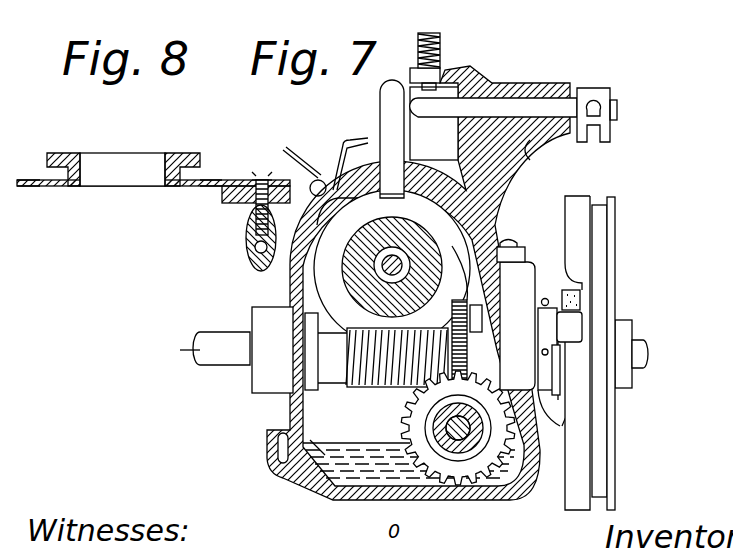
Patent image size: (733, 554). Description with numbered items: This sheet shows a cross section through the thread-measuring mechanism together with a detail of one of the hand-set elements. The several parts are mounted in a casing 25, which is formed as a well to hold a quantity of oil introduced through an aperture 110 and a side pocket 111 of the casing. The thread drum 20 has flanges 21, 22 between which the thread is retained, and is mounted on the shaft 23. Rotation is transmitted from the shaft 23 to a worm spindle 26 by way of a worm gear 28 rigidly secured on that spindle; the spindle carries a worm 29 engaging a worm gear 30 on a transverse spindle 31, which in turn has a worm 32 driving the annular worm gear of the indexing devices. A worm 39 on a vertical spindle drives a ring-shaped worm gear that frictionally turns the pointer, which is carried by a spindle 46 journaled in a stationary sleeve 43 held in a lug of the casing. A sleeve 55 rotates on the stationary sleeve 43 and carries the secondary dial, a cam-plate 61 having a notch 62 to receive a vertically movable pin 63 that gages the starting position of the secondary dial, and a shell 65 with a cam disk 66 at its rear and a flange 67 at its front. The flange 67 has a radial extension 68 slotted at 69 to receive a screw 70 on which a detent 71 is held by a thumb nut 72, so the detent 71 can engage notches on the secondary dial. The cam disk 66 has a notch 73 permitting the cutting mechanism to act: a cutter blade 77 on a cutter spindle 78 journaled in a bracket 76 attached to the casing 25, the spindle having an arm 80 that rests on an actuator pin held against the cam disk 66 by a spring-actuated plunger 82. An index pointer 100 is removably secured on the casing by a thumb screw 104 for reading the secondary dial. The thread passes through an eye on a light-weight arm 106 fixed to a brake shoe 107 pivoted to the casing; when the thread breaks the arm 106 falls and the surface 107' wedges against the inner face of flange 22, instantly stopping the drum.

In FIG. 7, the drum 20 is at (600, 473).
In FIG. 7, the flange 21 is at (616, 215).
In FIG. 7, the flange 22 is at (582, 196).
In FIG. 7, the shaft 23 is at (190, 350).
In FIG. 7, the casing 25 is at (340, 501).
In FIG. 7, the worm spindle 26 is at (456, 445).
In FIG. 7, the worm gear 28 is at (435, 475).
In FIG. 7, the worm 29 is at (536, 432).
In FIG. 7, the worm gear 30 is at (477, 370).
In FIG. 7, the transverse spindle 31 is at (265, 342).
In FIG. 7, the worm 32 is at (413, 407).
In FIG. 7, the worm 39 is at (490, 300).
In FIG. 7, the sleeve 43 is at (385, 262).
In FIG. 7, the spindle 46 is at (396, 250).
In FIG. 7, the sleeve 55 is at (392, 302).
In FIG. 7, the cam-plate 61 is at (462, 289).
In FIG. 7, the notch 62 is at (363, 213).
In FIG. 7, the pin 63 is at (380, 105).
In FIG. 8, the shell 65 is at (97, 178).
In FIG. 8, the cam disk 66 is at (58, 152).
In FIG. 8, the flange 67 is at (36, 187).
In FIG. 8, the radial extension 68 is at (205, 180).
In FIG. 8, the slot 69 is at (240, 175).
In FIG. 8, the screw 70 is at (265, 170).
In FIG. 8, the detent 71 is at (222, 198).
In FIG. 8, the thumb nut 72 is at (246, 242).
In FIG. 8, the notch 73 is at (190, 152).
In FIG. 7, the bracket 76 is at (539, 154).
In FIG. 7, the cutter blade 77 is at (590, 100).
In FIG. 7, the cutter spindle 78 is at (527, 98).
In FIG. 7, the arm 80 is at (428, 100).
In FIG. 7, the spring-actuated plunger 82 is at (442, 48).
In FIG. 7, the index pointer 100 is at (338, 140).
In FIG. 7, the thumb screw 104 is at (322, 180).
In FIG. 7, the arm 106 is at (560, 360).
In FIG. 7, the brake shoe 107 is at (616, 318).
In FIG. 7, the surface 107' is at (622, 287).
In FIG. 7, the aperture 110 is at (339, 425).
In FIG. 7, the side pocket 111 is at (281, 434).